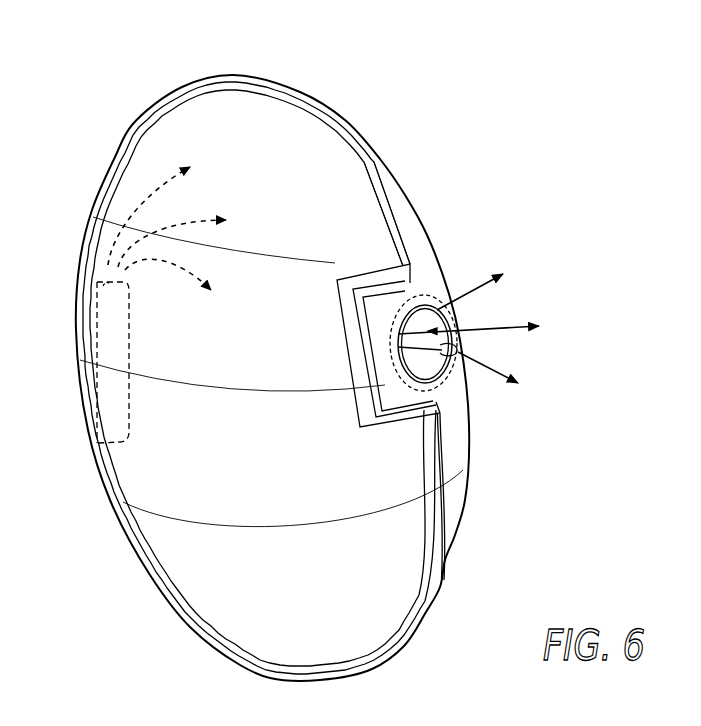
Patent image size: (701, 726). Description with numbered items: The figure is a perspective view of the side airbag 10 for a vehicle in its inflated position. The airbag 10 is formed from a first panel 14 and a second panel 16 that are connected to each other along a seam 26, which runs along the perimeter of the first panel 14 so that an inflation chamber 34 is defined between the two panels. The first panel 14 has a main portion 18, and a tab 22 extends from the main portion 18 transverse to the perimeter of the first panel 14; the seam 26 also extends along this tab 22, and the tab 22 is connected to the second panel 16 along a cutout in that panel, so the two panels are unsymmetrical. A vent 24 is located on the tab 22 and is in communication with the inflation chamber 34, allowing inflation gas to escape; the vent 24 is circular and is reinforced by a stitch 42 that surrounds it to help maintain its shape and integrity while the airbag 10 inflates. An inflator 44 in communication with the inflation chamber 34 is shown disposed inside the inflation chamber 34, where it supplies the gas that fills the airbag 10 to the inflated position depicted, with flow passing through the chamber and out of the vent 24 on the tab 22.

The airbag 10 is at (406, 194).
The first panel 14 is at (421, 247).
The second panel 16 is at (270, 128).
The main portion 18 is at (455, 427).
The tab 22 is at (395, 397).
The vent 24 is at (458, 347).
The seam 26 is at (375, 162).
The inflation chamber 34 is at (457, 318).
The stitch 42 is at (432, 295).
The inflator 44 is at (85, 414).